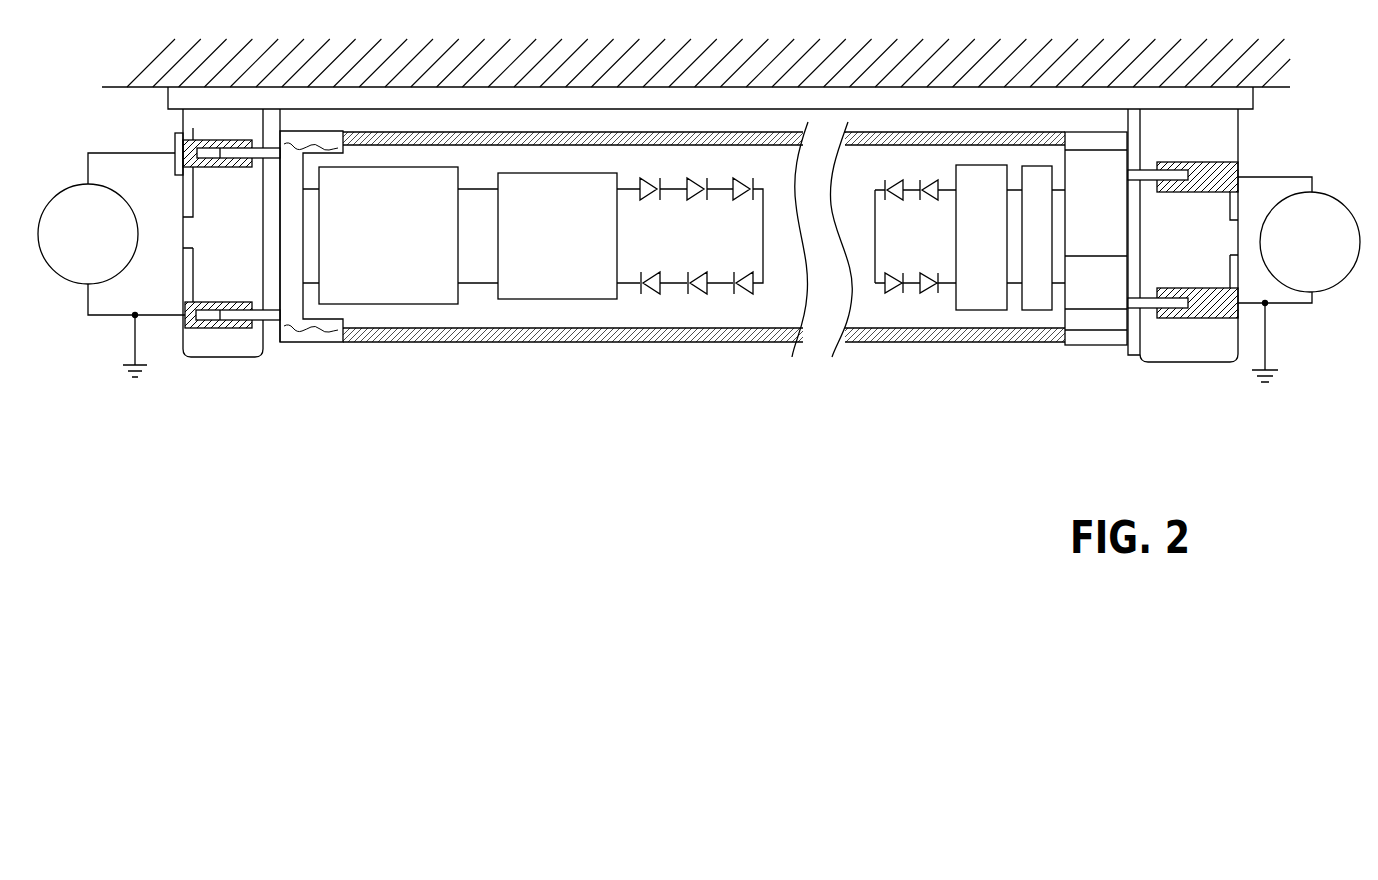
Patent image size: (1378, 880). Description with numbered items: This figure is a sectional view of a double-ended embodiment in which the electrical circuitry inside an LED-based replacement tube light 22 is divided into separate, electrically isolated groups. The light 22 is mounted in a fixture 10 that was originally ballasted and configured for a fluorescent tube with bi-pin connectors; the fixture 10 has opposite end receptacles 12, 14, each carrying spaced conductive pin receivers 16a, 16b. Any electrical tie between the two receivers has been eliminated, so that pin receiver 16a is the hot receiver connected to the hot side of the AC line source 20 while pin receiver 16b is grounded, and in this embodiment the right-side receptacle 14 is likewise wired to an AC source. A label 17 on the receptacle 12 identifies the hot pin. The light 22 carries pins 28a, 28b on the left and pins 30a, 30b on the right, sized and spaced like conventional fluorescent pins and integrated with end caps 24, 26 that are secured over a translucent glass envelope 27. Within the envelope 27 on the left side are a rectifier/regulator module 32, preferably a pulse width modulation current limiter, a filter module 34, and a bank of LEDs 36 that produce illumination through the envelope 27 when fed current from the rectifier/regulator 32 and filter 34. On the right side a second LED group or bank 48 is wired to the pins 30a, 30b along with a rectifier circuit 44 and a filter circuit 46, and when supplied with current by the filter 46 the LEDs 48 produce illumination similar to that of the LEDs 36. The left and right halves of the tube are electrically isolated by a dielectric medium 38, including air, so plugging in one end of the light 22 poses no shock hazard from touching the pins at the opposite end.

The fixture 10 is at (610, 87).
The end receptacle 12 is at (178, 118).
The end receptacle 14 is at (1134, 363).
The conductive pin receiver 16a is at (212, 167).
The conductive pin receiver 16b is at (222, 332).
The label 17 is at (183, 157).
The AC line source 20 is at (72, 190).
The LED-based light 22 is at (493, 342).
The end cap 24 is at (312, 340).
The end cap 26 is at (1075, 346).
The glass envelope 27 is at (745, 342).
The pin 28a is at (270, 146).
The pin 28b is at (272, 322).
The pin 30a is at (1150, 178).
The pin 30b is at (1145, 312).
The rectifier/regulator module 32 is at (388, 294).
The filter module 34 is at (545, 294).
The bank of LEDs 36 is at (645, 200).
The dielectric medium 38 is at (822, 345).
The rectifier circuit 44 is at (1037, 311).
The filter circuit 46 is at (980, 311).
The second LED group or bank 48 is at (898, 200).